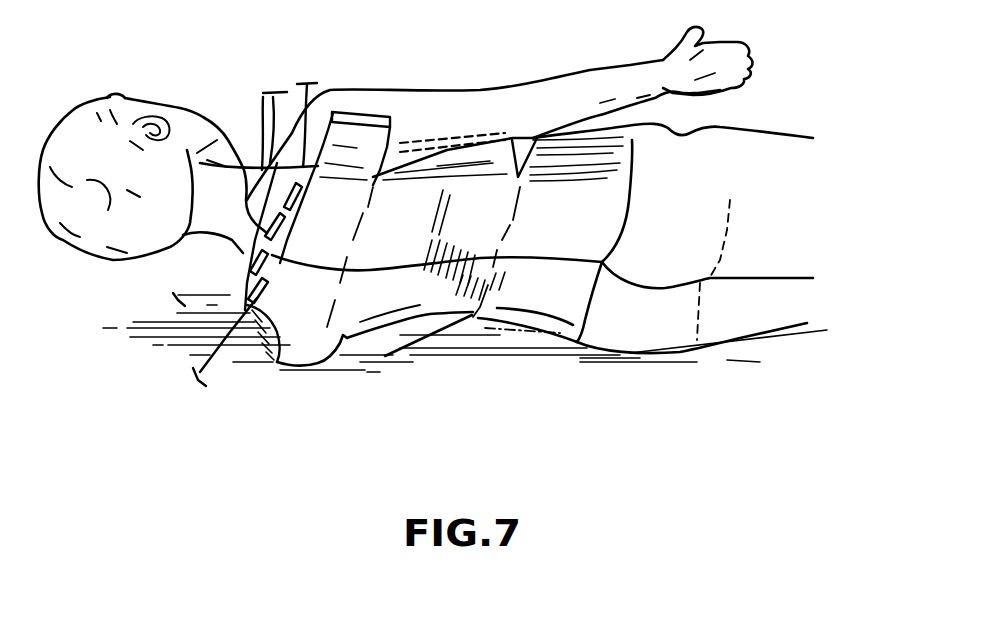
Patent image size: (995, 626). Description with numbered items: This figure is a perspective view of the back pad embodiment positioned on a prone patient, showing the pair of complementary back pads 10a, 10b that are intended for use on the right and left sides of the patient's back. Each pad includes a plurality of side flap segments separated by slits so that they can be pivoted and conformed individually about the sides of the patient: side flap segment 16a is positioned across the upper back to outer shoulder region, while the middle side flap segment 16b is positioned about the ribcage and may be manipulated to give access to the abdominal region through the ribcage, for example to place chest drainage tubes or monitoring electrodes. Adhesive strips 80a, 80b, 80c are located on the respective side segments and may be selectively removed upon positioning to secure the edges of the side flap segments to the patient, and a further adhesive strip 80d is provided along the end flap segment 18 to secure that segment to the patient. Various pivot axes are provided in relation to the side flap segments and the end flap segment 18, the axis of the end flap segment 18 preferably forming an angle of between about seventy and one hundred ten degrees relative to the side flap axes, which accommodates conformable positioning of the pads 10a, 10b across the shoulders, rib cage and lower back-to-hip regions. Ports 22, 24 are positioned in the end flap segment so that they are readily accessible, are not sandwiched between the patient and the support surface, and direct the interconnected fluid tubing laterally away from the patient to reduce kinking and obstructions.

The back pad 10a is at (630, 190).
The back pad 10b is at (592, 311).
The side flap segment 16a is at (373, 130).
The side flap segment 16b is at (497, 168).
The end flap segment 18 is at (290, 200).
The port 22 is at (190, 243).
The port 24 is at (237, 268).
The adhesive strip 80a is at (347, 110).
The adhesive strip 80b is at (442, 135).
The adhesive strip 80c is at (717, 127).
The adhesive strip 80d is at (278, 200).